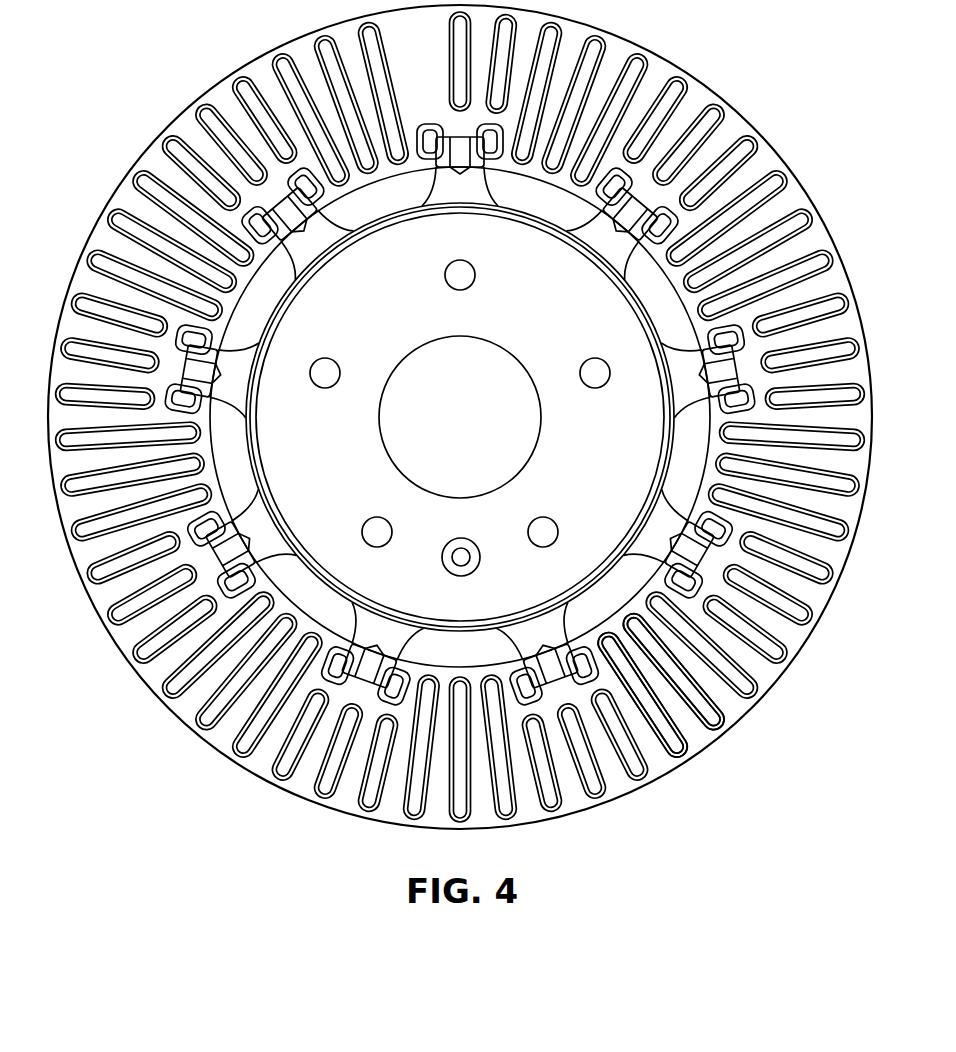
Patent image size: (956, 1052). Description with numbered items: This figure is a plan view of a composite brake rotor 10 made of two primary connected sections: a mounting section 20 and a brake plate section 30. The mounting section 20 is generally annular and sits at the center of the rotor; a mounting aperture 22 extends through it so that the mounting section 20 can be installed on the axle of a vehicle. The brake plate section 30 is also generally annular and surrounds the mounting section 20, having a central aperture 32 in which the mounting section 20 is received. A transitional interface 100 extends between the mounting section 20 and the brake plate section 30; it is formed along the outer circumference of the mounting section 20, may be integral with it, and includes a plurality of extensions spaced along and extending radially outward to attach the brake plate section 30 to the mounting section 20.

The brake rotor assembly 10 is at (789, 138).
The mounting section 20 is at (653, 437).
The mounting aperture 22 is at (470, 425).
The brake plate section 30 is at (822, 237).
The central aperture 32 is at (628, 612).
The transitional interface 100 is at (740, 363).